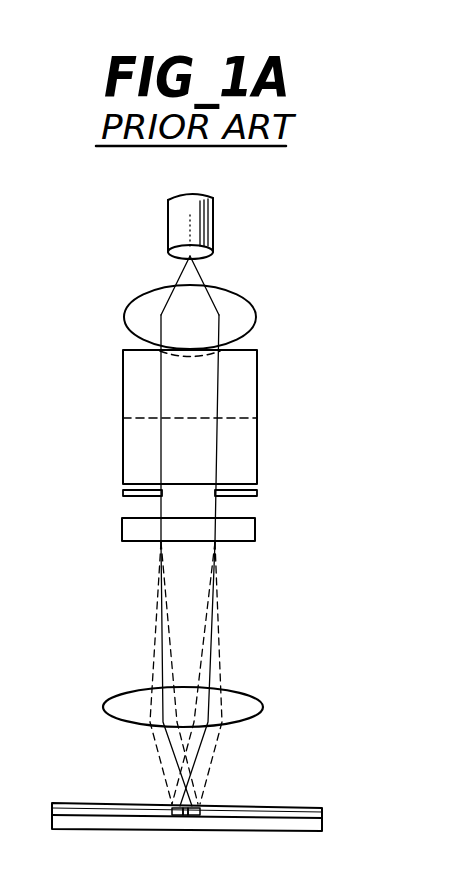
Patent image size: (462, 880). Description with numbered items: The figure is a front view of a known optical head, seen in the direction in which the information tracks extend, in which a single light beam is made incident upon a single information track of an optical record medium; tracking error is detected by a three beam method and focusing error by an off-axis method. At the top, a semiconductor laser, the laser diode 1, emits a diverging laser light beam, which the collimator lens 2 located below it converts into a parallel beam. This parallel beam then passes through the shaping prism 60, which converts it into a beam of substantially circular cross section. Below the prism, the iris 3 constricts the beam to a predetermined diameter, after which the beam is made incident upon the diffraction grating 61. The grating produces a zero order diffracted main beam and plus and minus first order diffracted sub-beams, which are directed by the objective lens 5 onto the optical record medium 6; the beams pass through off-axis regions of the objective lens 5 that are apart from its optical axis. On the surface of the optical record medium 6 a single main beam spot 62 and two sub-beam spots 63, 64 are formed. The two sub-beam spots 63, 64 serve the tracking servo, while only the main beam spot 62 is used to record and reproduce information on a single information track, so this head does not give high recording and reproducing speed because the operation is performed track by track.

The laser diode 1 is at (213, 222).
The collimator lens 2 is at (253, 307).
The shaping prism 60 is at (257, 398).
The iris 3 is at (257, 493).
The diffraction grating 61 is at (255, 535).
The objective lens 5 is at (263, 703).
The optical record medium 6 is at (322, 815).
The main beam spot 62 is at (184, 818).
The sub-beam spot 63 is at (168, 818).
The sub-beam spot 64 is at (202, 818).